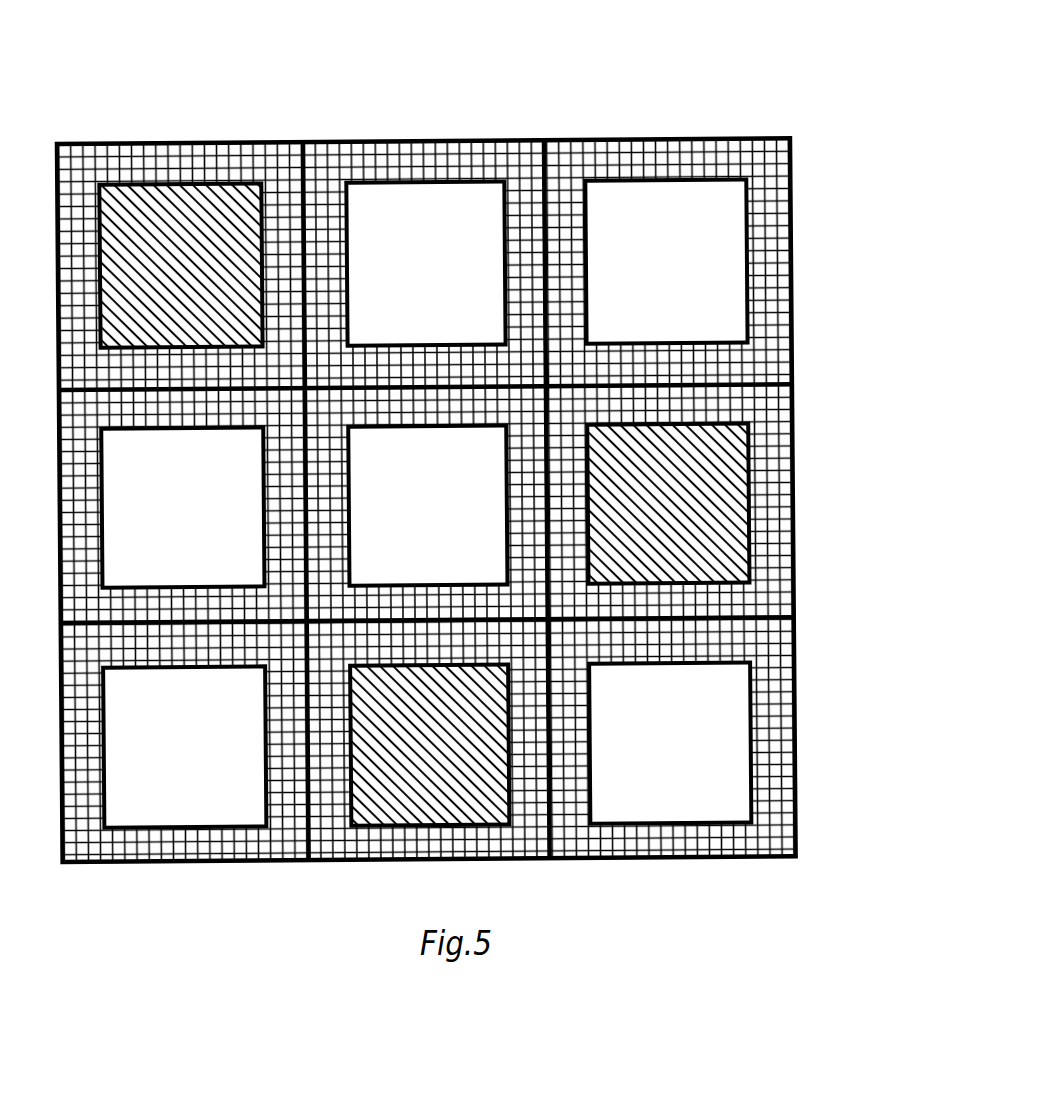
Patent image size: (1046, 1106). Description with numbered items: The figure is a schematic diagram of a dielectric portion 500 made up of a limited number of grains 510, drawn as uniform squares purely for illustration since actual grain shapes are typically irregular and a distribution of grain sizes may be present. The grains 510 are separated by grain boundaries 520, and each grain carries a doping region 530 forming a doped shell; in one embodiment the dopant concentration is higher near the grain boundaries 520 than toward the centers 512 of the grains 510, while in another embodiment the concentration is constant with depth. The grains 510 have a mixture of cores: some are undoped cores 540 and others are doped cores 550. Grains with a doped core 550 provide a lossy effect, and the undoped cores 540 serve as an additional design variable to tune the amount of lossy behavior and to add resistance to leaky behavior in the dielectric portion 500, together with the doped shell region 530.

The dielectric portion 500 is at (469, 435).
The grains 510 is at (780, 300).
The centers of grains 512 is at (652, 262).
The grain boundaries 520 is at (549, 205).
The doping regions 530 is at (706, 150).
The undoped cores 540 is at (425, 262).
The doped cores 550 is at (180, 262).